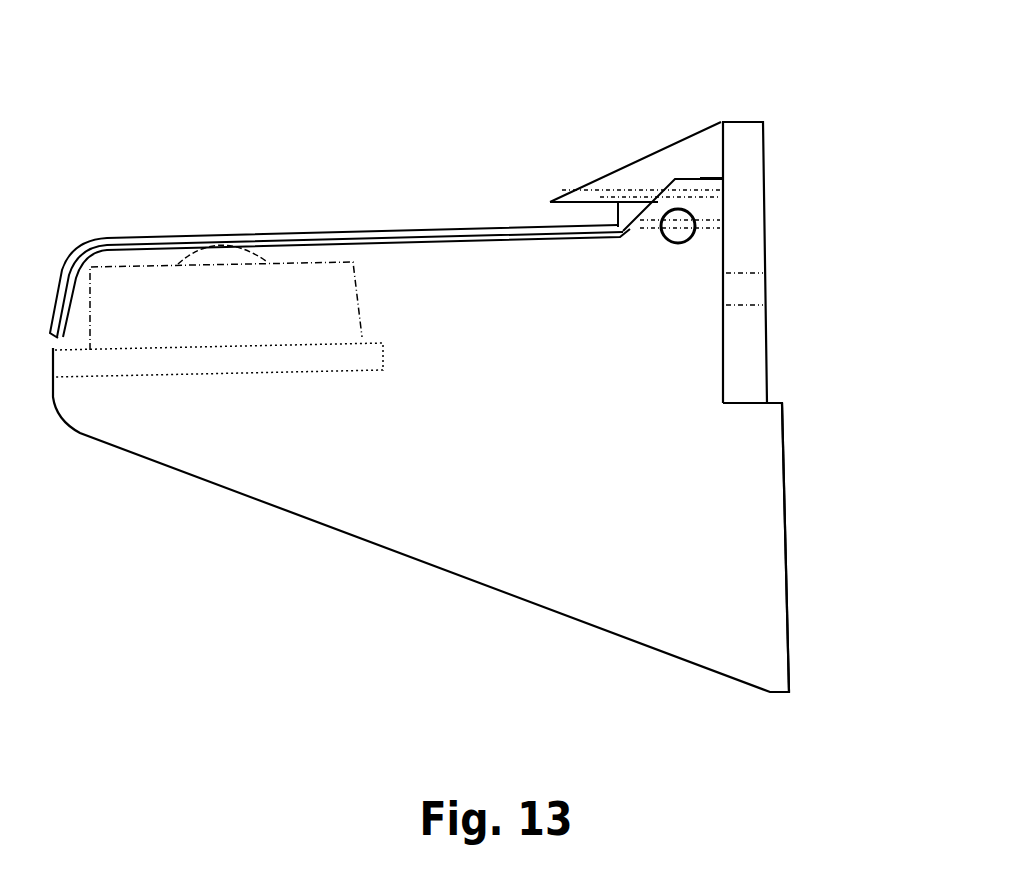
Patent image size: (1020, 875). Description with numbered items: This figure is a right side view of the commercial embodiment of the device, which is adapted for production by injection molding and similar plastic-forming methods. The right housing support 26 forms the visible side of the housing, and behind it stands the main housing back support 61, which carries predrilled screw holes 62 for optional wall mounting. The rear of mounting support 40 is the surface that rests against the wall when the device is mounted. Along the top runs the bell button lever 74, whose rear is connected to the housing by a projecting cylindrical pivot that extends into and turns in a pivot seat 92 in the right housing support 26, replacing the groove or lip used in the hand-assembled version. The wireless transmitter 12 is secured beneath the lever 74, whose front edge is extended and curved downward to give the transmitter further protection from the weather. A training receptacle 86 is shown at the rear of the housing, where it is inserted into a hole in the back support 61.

The wireless transmitter 12 is at (168, 306).
The right housing support 26 is at (423, 449).
The rear of mounting support 40 is at (788, 573).
The main housing back support 61 is at (738, 190).
The predrilled screw holes 62 is at (747, 288).
The bell button lever 74 is at (298, 230).
The training receptacle 86 is at (607, 175).
The pivot seat 92 is at (672, 232).